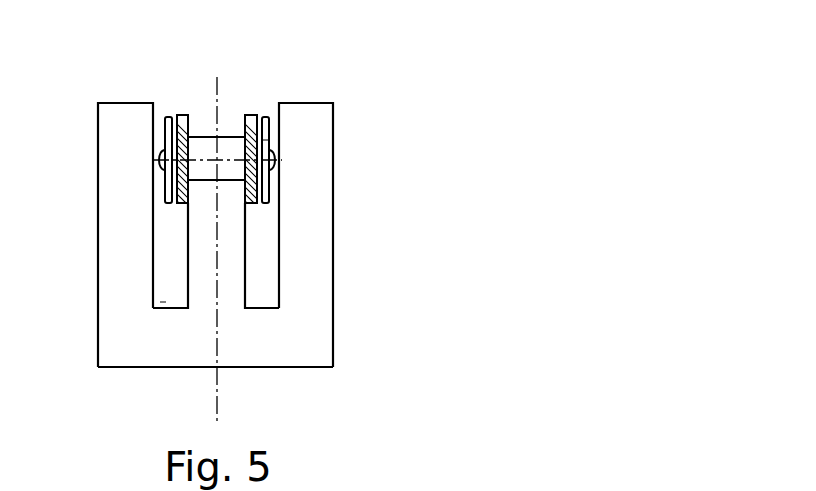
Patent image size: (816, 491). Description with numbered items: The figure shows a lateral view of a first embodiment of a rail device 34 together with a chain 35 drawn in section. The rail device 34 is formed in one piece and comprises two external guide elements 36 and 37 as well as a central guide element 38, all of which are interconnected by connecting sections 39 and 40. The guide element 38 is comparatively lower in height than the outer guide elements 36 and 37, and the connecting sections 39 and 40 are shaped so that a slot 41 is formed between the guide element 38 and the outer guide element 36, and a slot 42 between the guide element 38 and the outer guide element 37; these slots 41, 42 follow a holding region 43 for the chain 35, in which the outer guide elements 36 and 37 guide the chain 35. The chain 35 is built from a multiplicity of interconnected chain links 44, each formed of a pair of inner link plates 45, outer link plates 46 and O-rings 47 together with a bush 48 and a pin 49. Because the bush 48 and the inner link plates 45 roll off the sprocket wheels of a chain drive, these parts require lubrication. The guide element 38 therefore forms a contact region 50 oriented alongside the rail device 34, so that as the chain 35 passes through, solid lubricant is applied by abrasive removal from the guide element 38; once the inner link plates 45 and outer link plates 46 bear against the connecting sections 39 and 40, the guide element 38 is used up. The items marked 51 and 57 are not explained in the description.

The rail device 34 is at (434, 97).
The chain 35 is at (211, 95).
The external guide element 36 is at (120, 213).
The external guide element 37 is at (307, 253).
The guide element 38 is at (202, 233).
The connecting section 39 is at (173, 353).
The connecting section 40 is at (267, 353).
The slot 41 is at (162, 295).
The slot 42 is at (268, 293).
The holding region 43 is at (270, 93).
The chain link 44 is at (250, 90).
The inner link plate 45 is at (199, 177).
The outer link plate 46 is at (165, 115).
The O-ring 47 is at (177, 115).
The bush 48 is at (267, 147).
The pin 49 is at (277, 150).
The contact region 50 is at (167, 150).
The element 51 is at (350, 490).
The element 57 is at (69, 479).